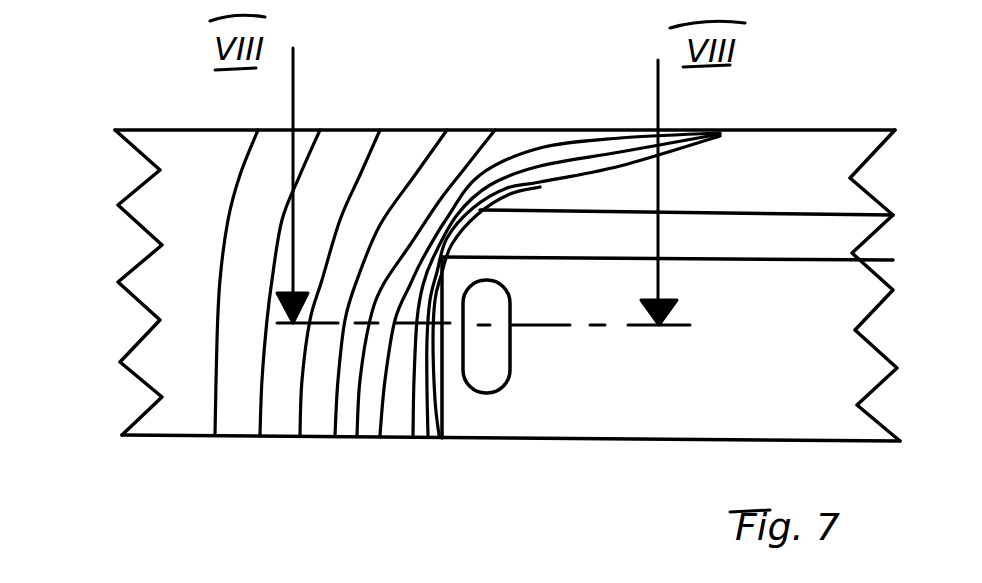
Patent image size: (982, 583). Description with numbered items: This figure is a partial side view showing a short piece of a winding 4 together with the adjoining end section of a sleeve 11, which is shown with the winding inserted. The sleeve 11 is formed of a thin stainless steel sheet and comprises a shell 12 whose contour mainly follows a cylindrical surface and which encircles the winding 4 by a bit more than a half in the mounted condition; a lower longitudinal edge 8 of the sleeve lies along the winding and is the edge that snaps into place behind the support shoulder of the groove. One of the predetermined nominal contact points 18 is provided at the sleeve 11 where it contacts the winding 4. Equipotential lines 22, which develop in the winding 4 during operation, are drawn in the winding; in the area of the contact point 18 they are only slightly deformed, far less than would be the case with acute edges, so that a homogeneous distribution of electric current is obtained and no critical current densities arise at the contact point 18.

The winding 4 is at (160, 205).
The longitudinal edge 8 is at (812, 238).
The sleeve 11 is at (557, 447).
The shell 12 is at (635, 420).
The nominal contact point 18 is at (488, 365).
The equipotential lines 22 is at (336, 410).